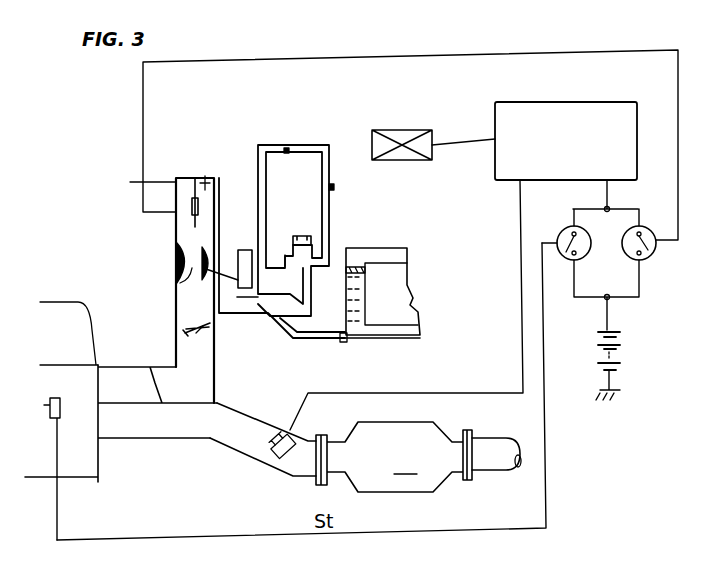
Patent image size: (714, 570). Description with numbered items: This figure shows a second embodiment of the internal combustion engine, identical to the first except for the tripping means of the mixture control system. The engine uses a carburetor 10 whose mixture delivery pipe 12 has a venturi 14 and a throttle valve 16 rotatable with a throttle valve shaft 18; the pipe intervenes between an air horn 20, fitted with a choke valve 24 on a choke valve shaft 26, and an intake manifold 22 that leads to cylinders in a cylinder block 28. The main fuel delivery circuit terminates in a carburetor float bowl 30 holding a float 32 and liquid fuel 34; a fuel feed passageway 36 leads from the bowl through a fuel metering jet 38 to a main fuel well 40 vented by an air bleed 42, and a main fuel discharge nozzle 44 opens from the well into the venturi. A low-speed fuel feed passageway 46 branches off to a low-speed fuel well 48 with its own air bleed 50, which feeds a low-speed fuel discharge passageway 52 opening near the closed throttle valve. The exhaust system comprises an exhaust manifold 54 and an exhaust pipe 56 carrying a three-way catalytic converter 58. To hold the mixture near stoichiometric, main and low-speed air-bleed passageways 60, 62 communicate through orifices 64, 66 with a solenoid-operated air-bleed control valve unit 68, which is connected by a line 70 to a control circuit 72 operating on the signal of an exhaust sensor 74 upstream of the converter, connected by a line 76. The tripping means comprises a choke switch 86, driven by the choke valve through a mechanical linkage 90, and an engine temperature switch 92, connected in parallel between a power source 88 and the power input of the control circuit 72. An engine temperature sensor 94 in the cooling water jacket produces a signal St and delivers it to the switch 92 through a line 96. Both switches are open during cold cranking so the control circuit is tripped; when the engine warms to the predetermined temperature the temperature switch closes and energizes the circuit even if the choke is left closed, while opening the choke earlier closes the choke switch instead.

The carburetor 10 is at (170, 238).
The mixture delivery pipe 12 is at (177, 257).
The venturi 14 is at (180, 293).
The throttle valve 16 is at (183, 330).
The throttle valve shaft 18 is at (200, 331).
The air horn 20 is at (137, 183).
The intake manifold 22 is at (138, 367).
The choke valve 24 is at (185, 178).
The choke valve shaft 26 is at (206, 178).
The cylinder block 28 is at (103, 470).
The carburetor float bowl 30 is at (420, 337).
The float 32 is at (408, 315).
The liquid fuel 34 is at (360, 268).
The fuel feed passageway 36 is at (344, 342).
The fuel metering jet 38 is at (354, 340).
The main fuel well 40 is at (222, 252).
The air bleed 42 is at (247, 250).
The main fuel discharge nozzle 44 is at (226, 300).
The low-speed fuel feed passageway 46 is at (290, 286).
The low-speed fuel well 48 is at (290, 237).
The air bleed 50 is at (301, 236).
The low-speed fuel discharge passageway 52 is at (278, 330).
The exhaust manifold 54 is at (240, 452).
The exhaust pipe 56 is at (485, 468).
The catalytic converter 58 is at (394, 457).
The main air-bleed passageway 60 is at (258, 160).
The low-speed air-bleed passageway 62 is at (333, 218).
The orifice 64 is at (288, 148).
The orifice 66 is at (334, 188).
The solenoid-operated air-bleed control valve unit 68 is at (404, 130).
The line 70 is at (466, 146).
The control circuit 72 is at (585, 102).
The exhaust sensor 74 is at (283, 432).
The line 76 is at (488, 395).
The choke switch 86 is at (652, 255).
The power source 88 is at (618, 350).
The mechanical linkage 90 is at (508, 53).
The engine temperature switch 92 is at (584, 258).
The engine temperature sensor 94 is at (39, 467).
The line 96 is at (205, 536).